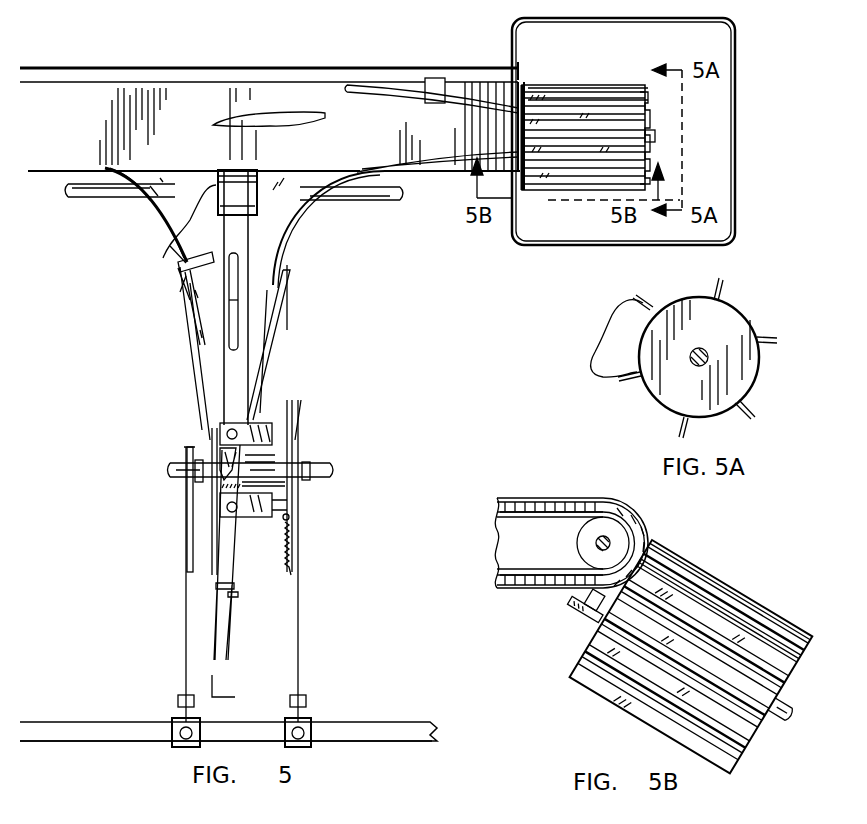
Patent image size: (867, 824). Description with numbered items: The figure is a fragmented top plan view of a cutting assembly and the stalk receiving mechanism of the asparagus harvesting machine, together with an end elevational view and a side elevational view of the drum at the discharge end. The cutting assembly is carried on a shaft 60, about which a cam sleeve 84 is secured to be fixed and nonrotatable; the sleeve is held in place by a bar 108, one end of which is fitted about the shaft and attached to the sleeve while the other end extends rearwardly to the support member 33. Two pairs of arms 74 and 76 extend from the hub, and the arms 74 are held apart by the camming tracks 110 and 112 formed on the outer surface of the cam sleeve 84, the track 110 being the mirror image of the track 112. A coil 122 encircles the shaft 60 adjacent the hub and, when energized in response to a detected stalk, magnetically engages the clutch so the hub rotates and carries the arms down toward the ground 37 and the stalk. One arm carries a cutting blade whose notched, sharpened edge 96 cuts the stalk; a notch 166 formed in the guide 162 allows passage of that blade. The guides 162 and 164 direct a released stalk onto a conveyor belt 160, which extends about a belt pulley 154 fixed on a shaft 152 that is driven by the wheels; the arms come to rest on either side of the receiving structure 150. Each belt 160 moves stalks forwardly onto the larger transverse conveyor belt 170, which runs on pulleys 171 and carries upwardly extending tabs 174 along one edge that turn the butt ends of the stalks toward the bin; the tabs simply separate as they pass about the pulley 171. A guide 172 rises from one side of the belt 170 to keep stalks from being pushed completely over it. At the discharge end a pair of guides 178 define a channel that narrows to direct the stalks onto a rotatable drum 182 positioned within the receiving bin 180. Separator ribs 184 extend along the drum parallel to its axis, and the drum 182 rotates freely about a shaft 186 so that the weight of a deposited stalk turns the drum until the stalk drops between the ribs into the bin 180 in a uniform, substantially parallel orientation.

In FIG. 5, the support member 33 is at (131, 722).
In FIG. 5, the stalk 37 is at (292, 112).
In FIG. 5, the shaft 60 is at (185, 468).
In FIG. 5, the pair of arms 74 is at (195, 390).
In FIG. 5, the pair of arms 76 is at (230, 560).
In FIG. 5, the cam sleeve 84 is at (210, 443).
In FIG. 5, the edge of the cutting blade 96 is at (180, 290).
In FIG. 5, the bar 108 is at (186, 552).
In FIG. 5, the camming track 110 is at (225, 460).
In FIG. 5, the camming track 112 is at (260, 475).
In FIG. 5, the coil 122 is at (290, 438).
In FIG. 5, the receiving structure 150 is at (298, 243).
In FIG. 5, the shaft 152 is at (72, 197).
In FIG. 5, the belt pulley 154 is at (185, 229).
In FIG. 5, the conveyor belt 160 is at (240, 350).
In FIG. 5, the guide 162 is at (178, 262).
In FIG. 5, the guide 164 is at (287, 270).
In FIG. 5, the notch 166 is at (178, 275).
In FIG. 5, the conveyor belt 170 is at (115, 90).
In FIG. 5B, the conveyor belt 170 is at (497, 513).
In FIG. 5, the pulley 171 is at (493, 178).
In FIG. 5B, the pulley 171 is at (620, 538).
In FIG. 5, the guide 172 is at (272, 70).
In FIG. 5B, the tabs 174 is at (590, 500).
In FIG. 5, the guides 178 is at (472, 168).
In FIG. 5, the receiving bin 180 is at (572, 18).
In FIG. 5, the rotatable drum 182 is at (620, 72).
In FIG. 5A, the rotatable drum 182 is at (732, 298).
In FIG. 5B, the rotatable drum 182 is at (776, 615).
In FIG. 5, the separator ribs 184 is at (552, 85).
In FIG. 5A, the separator ribs 184 is at (603, 336).
In FIG. 5B, the separator ribs 184 is at (690, 600).
In FIG. 5, the shaft 186 is at (660, 132).
In FIG. 5A, the shaft 186 is at (708, 356).
In FIG. 5B, the shaft 186 is at (773, 720).